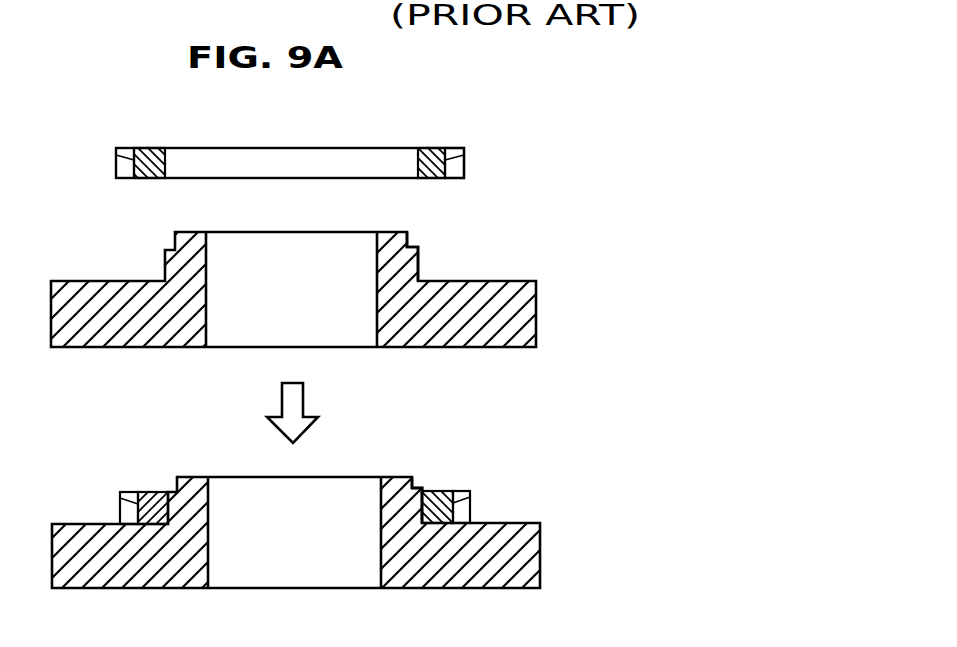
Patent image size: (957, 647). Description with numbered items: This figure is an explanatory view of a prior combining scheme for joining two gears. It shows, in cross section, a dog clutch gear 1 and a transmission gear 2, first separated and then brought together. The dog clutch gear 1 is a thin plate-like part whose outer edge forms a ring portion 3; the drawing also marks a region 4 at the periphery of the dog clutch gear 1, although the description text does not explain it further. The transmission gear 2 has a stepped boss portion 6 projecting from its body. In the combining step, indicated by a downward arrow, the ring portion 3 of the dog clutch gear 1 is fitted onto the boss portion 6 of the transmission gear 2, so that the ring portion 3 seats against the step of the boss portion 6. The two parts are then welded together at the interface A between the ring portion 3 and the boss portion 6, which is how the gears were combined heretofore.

The dog clutch gear 1 is at (145, 133).
The transmission gear 2 is at (105, 270).
The ring portion 3 is at (426, 147).
The bevel (chamfered periphery) of wafer 4 is at (465, 157).
The boss portion 6 is at (412, 263).
The interface A is at (423, 486).